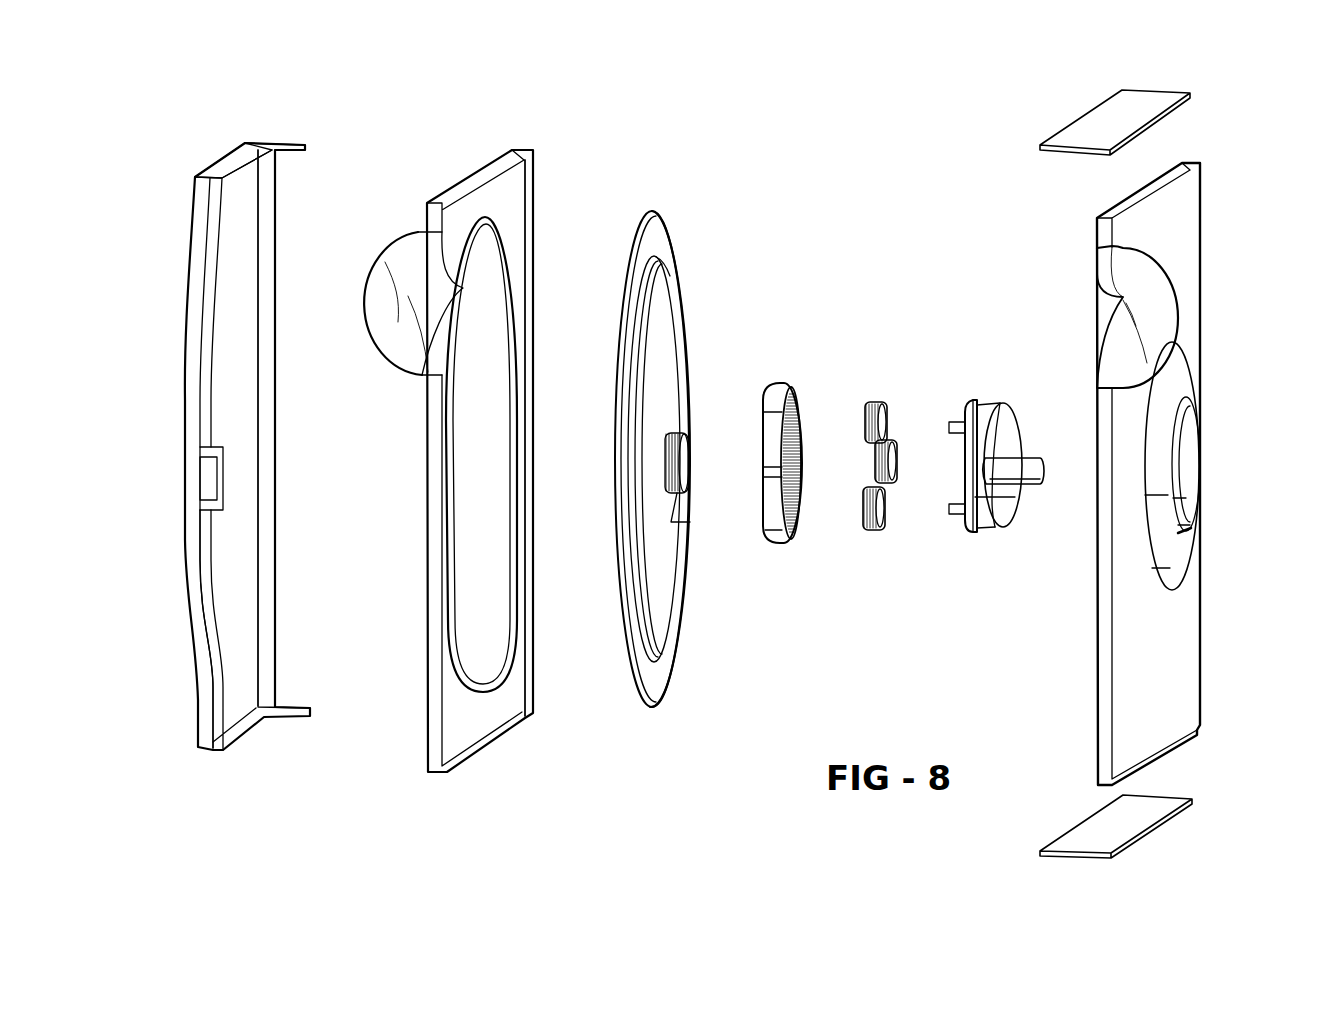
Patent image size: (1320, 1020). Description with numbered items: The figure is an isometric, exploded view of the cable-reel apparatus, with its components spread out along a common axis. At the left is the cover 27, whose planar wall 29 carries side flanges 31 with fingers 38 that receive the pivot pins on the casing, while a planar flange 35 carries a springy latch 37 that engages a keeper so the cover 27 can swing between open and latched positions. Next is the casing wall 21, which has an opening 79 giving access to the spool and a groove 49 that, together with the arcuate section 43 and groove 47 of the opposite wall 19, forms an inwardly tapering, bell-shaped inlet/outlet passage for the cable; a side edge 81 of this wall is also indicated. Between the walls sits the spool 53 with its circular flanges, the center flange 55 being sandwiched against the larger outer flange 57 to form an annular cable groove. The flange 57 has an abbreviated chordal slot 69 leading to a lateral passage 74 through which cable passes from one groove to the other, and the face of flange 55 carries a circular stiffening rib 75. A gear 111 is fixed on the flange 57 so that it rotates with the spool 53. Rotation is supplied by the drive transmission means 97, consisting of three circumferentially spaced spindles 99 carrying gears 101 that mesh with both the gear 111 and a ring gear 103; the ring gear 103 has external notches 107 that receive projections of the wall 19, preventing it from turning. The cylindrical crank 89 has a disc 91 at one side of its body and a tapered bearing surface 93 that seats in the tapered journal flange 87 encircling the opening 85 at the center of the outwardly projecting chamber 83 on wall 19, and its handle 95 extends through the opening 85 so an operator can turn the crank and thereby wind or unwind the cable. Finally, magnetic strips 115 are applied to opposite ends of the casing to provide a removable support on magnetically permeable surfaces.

The wall 19 is at (1137, 474).
The wall 21 is at (475, 470).
The cover 27 is at (228, 413).
The planar wall 29 is at (250, 560).
The side flanges 31 is at (222, 172).
The planar flange 35 is at (202, 630).
The springy latch 37 is at (220, 480).
The fingers 38 is at (292, 145).
The arcuate section 43 is at (1160, 313).
The groove 47 is at (1120, 300).
The groove 49 is at (465, 290).
The spool 53 is at (690, 492).
The flange 55 is at (672, 660).
The flange 57 is at (674, 616).
The chordal slot 69 is at (680, 347).
The lateral passage 74 is at (684, 522).
The circular stiffening rib 75 is at (670, 262).
The opening 79 is at (503, 600).
The plate side edge 81 is at (515, 460).
The chamber 83 is at (1188, 370).
The opening 85 is at (1199, 456).
The tapered journal flange 87 is at (1194, 545).
The cylindrical crank 89 is at (988, 465).
The disc 91 is at (974, 400).
The tapered bearing surface 93 is at (1000, 403).
The handle 95 is at (1025, 462).
The drive transmission means 97 is at (851, 501).
The spindles 99 is at (949, 426).
The gears 101 is at (866, 418).
The ring gear 103 is at (752, 432).
The external notches 107 is at (763, 433).
The gear 111 is at (690, 485).
The magnetic strips 115 is at (1095, 120).